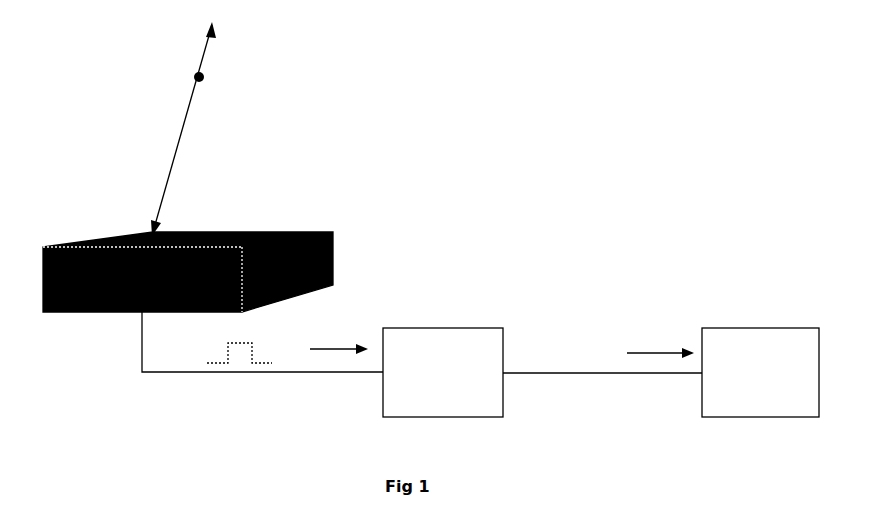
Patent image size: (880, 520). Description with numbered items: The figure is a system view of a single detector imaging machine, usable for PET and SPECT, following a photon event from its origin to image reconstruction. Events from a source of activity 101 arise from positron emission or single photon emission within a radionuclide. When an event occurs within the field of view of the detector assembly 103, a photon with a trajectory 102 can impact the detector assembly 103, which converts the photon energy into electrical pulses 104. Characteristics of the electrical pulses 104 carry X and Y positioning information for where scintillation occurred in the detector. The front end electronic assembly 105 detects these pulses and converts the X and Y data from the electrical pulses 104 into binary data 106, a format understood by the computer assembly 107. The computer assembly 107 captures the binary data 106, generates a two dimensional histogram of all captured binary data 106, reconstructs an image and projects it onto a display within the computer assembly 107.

The source of activity 101 is at (177, 73).
The trajectory 102 is at (187, 145).
The detector assembly 103 is at (338, 257).
The electrical pulses 104 is at (223, 373).
The front end electronic assembly 105 is at (443, 328).
The binary data 106 is at (548, 350).
The computer assembly 107 is at (768, 328).